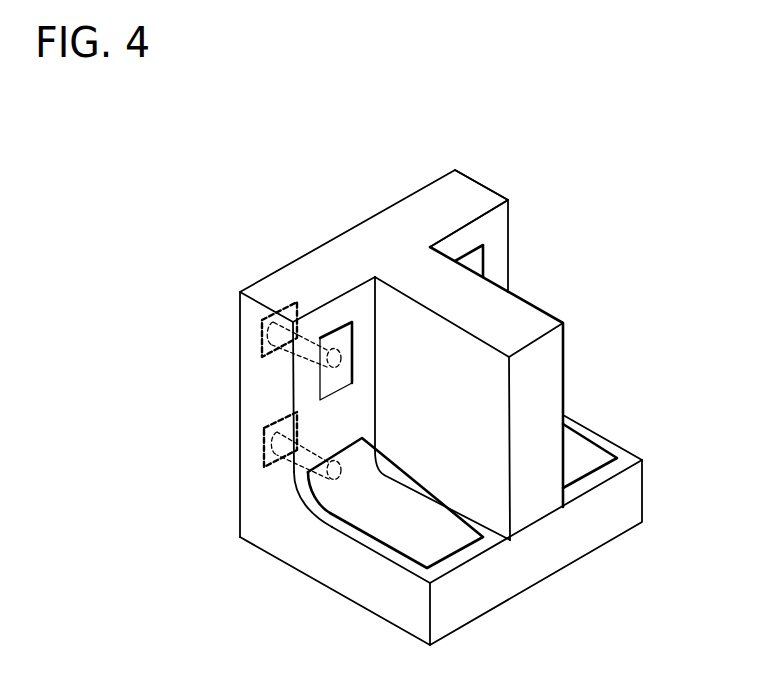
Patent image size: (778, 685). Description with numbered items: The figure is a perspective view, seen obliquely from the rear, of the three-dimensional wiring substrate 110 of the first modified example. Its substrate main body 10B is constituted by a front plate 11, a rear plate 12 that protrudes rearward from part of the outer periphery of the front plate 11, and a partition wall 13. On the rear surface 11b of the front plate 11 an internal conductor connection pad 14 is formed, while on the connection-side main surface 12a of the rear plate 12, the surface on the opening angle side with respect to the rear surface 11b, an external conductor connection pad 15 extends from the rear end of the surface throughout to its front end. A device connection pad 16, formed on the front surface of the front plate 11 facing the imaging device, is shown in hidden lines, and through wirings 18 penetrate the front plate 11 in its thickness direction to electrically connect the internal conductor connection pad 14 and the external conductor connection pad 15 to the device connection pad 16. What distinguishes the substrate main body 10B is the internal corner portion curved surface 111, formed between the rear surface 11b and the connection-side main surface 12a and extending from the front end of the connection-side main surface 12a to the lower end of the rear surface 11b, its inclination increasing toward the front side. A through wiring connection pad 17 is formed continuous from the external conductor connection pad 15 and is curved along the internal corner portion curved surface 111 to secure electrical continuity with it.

The substrate main body 10B is at (404, 205).
The three-dimensional wiring substrate 110 is at (480, 185).
The front plate 11 is at (480, 198).
The rear surface 11b is at (495, 229).
The rear plate 12 is at (627, 502).
The connection-side main surface 12a is at (627, 455).
The partition wall 13 is at (538, 325).
The internal conductor connection pad 14 is at (342, 387).
The external conductor connection pad 15 is at (416, 549).
The device connection pad 16 is at (262, 337).
The through wiring connection pad 17 is at (360, 468).
The through wiring 18 is at (306, 333).
The internal corner portion curved surface 111 is at (375, 450).